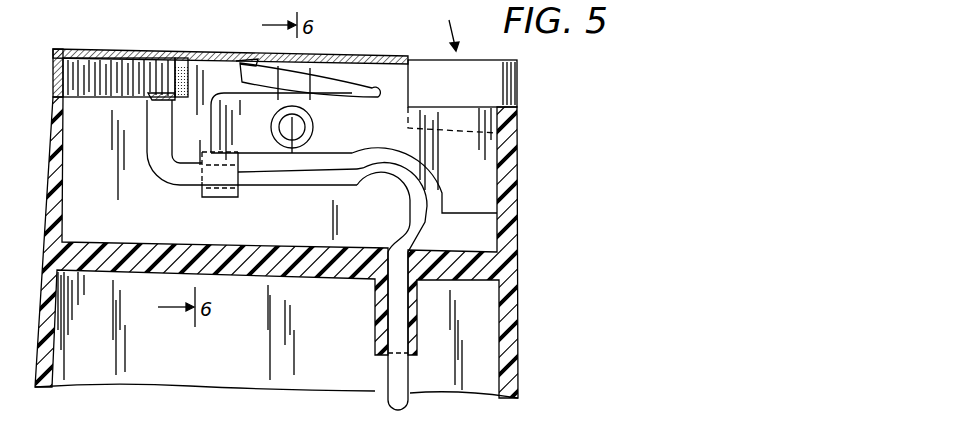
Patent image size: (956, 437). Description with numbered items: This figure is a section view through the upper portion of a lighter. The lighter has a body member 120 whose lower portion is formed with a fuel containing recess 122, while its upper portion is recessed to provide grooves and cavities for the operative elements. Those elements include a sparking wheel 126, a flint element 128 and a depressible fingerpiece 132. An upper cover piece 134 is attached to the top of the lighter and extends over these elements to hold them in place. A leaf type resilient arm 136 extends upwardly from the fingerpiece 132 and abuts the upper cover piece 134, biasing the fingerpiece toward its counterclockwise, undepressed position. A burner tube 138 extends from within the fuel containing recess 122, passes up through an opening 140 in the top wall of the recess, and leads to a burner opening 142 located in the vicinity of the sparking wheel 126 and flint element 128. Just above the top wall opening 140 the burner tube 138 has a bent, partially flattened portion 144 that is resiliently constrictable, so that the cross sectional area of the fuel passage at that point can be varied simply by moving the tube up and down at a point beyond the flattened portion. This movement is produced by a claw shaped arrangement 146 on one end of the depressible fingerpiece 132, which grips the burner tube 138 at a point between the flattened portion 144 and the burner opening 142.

The body member 120 is at (525, 291).
The fuel containing recess 122 is at (254, 361).
The sparking wheel 126 is at (100, 58).
The flint element 128 is at (194, 34).
The depressible fingerpiece 132 is at (352, 93).
The upper cover piece 134 is at (263, 54).
The leaf type resilient arm 136 is at (238, 74).
The burner tube 138 is at (322, 190).
The opening 140 is at (388, 248).
The burner opening 142 is at (160, 101).
The bent, partially flattened portion 144 is at (412, 192).
The claw shaped arrangement 146 is at (225, 198).